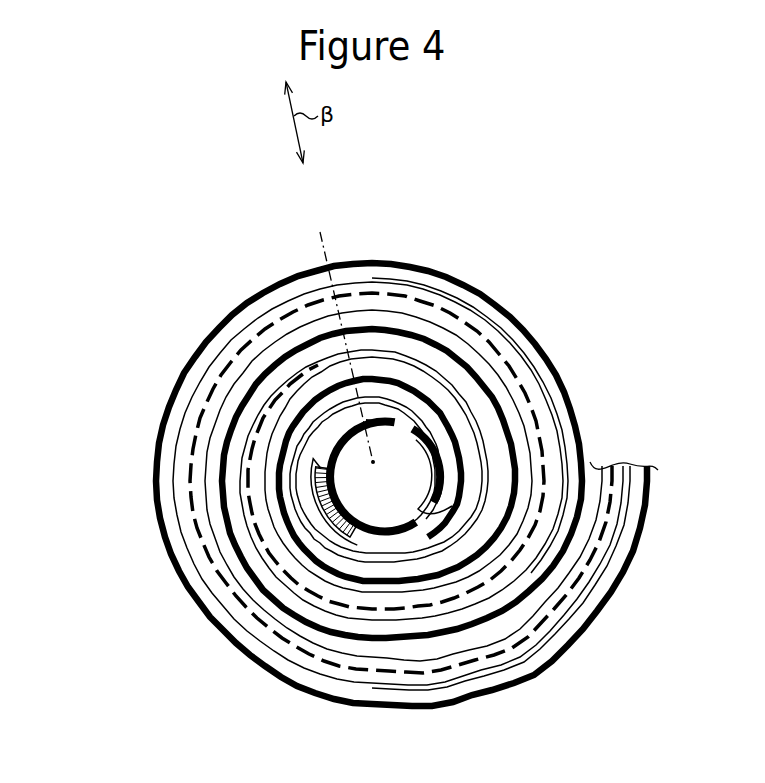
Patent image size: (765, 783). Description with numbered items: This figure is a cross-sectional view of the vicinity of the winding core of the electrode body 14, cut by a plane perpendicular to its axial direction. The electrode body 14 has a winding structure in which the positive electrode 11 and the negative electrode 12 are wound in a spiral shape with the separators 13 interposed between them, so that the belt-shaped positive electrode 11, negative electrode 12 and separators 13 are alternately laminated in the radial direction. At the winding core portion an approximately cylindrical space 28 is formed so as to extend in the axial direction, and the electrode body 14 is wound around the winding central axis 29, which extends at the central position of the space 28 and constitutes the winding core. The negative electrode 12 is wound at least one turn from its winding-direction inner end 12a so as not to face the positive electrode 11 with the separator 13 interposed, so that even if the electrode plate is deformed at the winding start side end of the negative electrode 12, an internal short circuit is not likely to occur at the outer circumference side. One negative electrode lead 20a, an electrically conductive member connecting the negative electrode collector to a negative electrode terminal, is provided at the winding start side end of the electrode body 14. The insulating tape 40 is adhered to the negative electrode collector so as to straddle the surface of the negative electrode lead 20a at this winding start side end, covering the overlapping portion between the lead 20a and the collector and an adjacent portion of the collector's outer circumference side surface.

The positive electrode 11 is at (543, 412).
The negative electrode 12 is at (504, 400).
The winding-direction inner end 12a is at (364, 415).
The separator 13 is at (565, 437).
The electrode body 14 is at (409, 481).
The negative electrode lead 20a is at (326, 520).
The space 28 is at (412, 443).
The winding central axis 29 is at (373, 462).
The insulating tape 40 is at (395, 540).